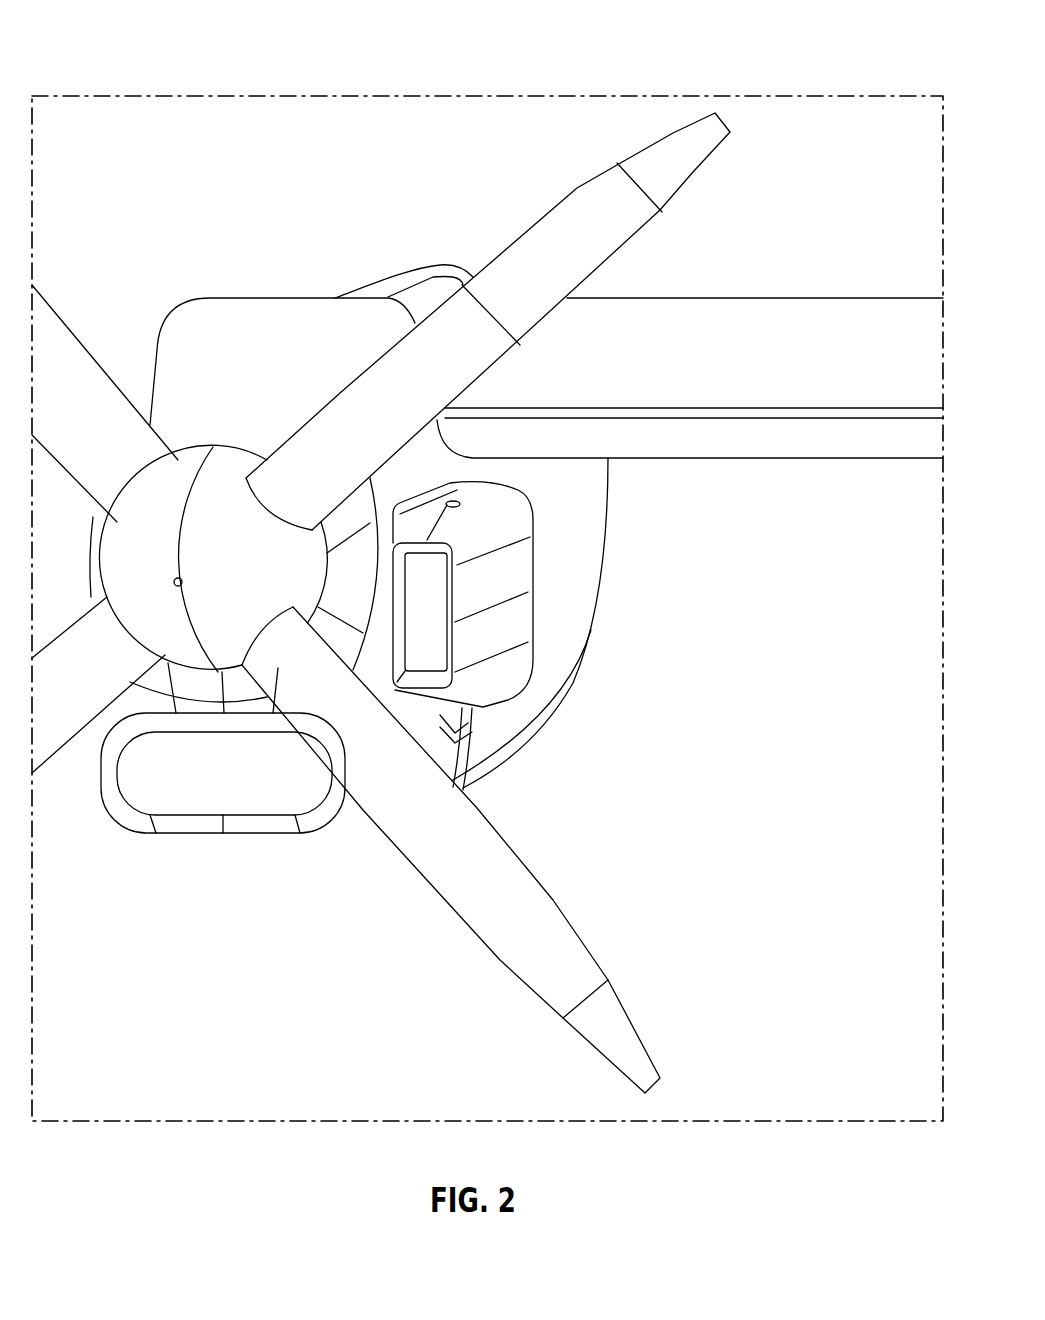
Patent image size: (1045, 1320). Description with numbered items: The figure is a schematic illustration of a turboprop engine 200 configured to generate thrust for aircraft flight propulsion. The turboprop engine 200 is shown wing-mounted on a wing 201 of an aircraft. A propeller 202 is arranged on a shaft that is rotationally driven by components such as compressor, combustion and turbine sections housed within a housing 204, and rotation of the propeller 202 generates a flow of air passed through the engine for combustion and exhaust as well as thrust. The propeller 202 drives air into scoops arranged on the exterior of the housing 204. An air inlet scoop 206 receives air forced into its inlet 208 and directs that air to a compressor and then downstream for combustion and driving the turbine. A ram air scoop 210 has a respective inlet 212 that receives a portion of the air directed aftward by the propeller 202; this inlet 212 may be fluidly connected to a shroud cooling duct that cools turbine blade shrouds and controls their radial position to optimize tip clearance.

The turboprop engine 200 is at (116, 56).
The wing 201 is at (770, 297).
The propeller 202 is at (230, 457).
The housing 204 is at (588, 535).
The air inlet scoop 206 is at (183, 858).
The inlet 208 is at (272, 787).
The ram air scoop 210 is at (500, 582).
The inlet 212 is at (430, 645).